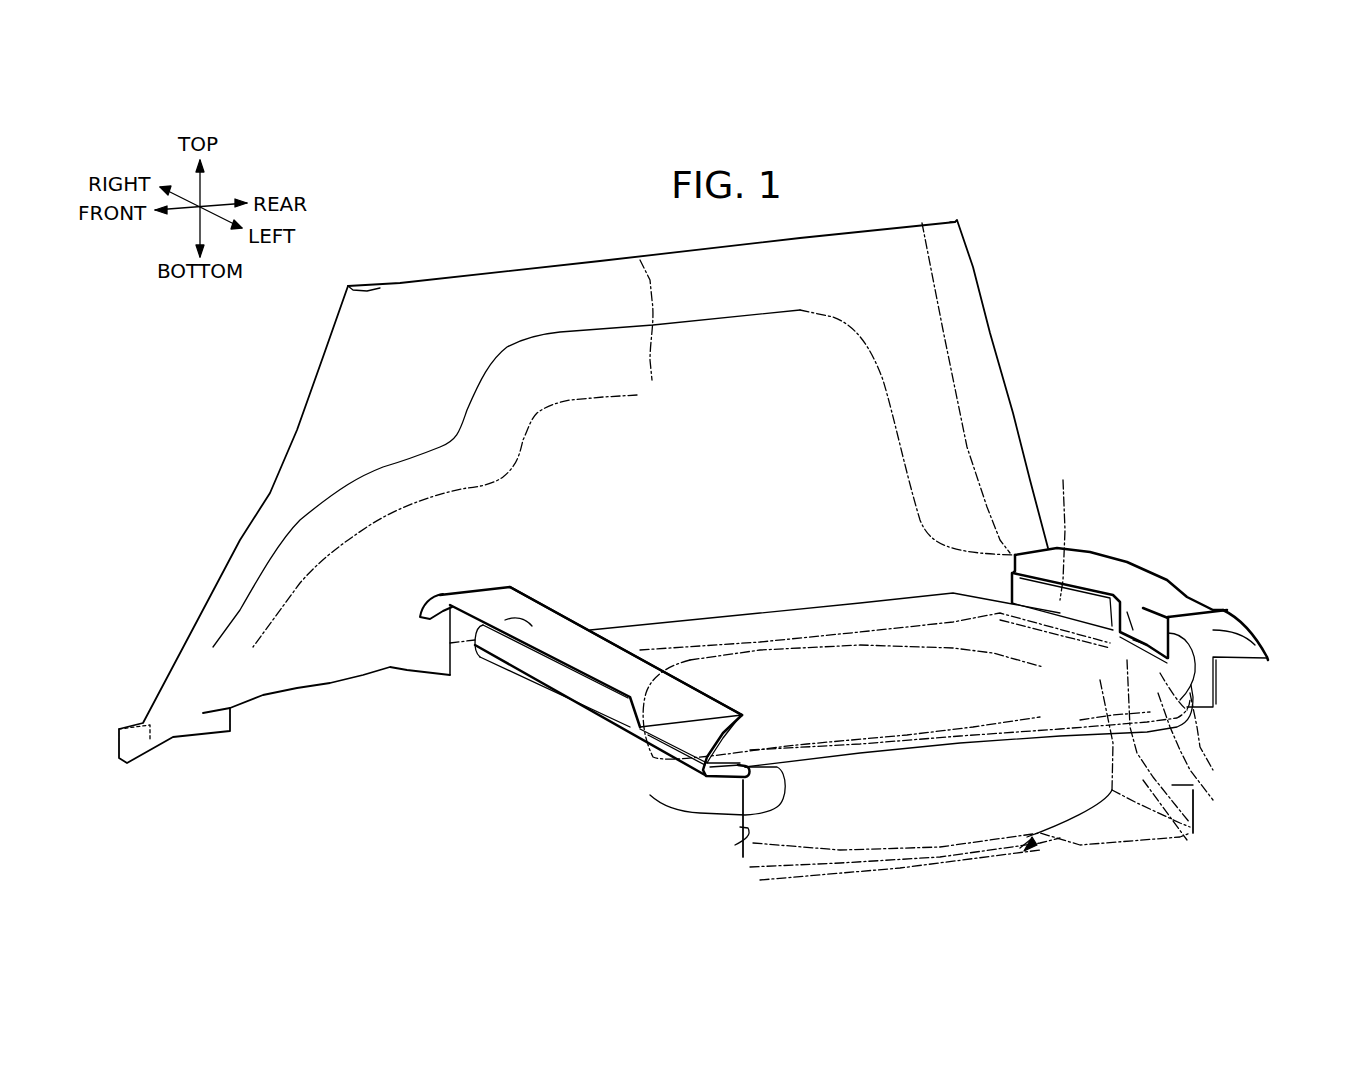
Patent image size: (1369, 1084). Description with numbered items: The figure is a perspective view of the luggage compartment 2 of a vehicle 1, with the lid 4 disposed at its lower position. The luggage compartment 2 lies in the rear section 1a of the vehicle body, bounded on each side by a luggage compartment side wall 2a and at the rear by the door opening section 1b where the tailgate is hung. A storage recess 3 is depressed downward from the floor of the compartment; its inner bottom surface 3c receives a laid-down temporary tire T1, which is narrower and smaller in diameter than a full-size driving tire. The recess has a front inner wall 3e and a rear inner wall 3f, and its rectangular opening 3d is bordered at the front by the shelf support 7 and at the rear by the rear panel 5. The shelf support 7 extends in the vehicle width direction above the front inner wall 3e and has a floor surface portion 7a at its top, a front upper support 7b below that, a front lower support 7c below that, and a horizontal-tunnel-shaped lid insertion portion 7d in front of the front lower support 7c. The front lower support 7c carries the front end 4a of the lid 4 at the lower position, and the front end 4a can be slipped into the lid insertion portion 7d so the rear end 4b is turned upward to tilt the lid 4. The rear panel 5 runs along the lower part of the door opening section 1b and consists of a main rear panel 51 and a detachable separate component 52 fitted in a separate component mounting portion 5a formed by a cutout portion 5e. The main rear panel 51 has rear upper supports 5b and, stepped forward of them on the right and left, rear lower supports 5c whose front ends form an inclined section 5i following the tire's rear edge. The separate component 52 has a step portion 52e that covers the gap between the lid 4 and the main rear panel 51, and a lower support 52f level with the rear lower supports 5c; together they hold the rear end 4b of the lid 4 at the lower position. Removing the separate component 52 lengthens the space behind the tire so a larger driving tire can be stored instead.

The vehicle 1 is at (283, 368).
The rear section of the vehicle body 1a is at (866, 250).
The door opening section 1b is at (988, 336).
The luggage compartment 2 is at (905, 380).
The luggage compartment side wall 2a is at (651, 380).
The storage recess 3 is at (765, 850).
The inner bottom surface 3c is at (833, 858).
The opening 3d is at (550, 612).
The front inner wall 3e is at (740, 843).
The rear inner wall 3f is at (1195, 827).
The lid 4 is at (925, 610).
The front end of the lid 4a is at (745, 814).
The rear end of the lid 4b is at (1213, 770).
The rear panel 5 is at (1080, 573).
The separate component mounting portion 5a is at (1133, 640).
The rear upper support 5b is at (1253, 643).
The rear lower support 5c is at (1218, 682).
The cutout portion 5e is at (1230, 613).
The inclined section 5i is at (1193, 786).
The main rear panel 51 is at (1063, 480).
The separate component 52 is at (1147, 647).
The step portion 52e is at (1127, 612).
The lower support 52f is at (1190, 827).
The shelf support 7 is at (515, 685).
The floor surface portion 7a is at (505, 645).
The front upper support 7b is at (660, 725).
The front lower support 7c is at (700, 766).
The lid insertion portion 7d is at (715, 752).
The temporary tire T1 is at (1030, 845).